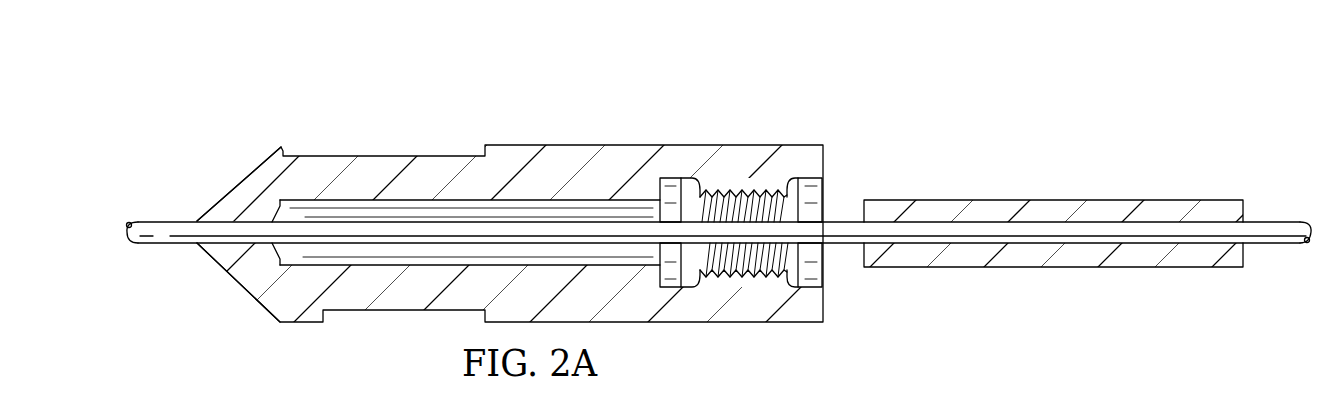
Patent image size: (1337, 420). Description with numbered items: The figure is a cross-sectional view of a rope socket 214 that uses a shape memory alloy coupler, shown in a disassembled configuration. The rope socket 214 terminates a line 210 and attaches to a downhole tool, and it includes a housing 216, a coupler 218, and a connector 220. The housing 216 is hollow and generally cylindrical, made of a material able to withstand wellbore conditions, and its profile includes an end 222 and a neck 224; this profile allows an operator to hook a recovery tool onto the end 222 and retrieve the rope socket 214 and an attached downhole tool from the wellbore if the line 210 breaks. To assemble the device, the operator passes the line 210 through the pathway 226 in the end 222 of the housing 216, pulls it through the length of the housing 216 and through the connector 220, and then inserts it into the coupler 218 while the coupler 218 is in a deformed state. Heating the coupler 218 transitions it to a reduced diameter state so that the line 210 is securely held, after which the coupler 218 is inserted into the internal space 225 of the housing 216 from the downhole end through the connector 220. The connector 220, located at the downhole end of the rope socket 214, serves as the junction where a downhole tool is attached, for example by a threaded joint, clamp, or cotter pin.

The rope socket 214 is at (834, 80).
The housing 216 is at (628, 143).
The neck 224 is at (443, 165).
The end 222 is at (237, 183).
The internal space 225 is at (345, 213).
The pathway 226 is at (190, 215).
The line 210 is at (163, 236).
The connector 220 is at (820, 335).
The coupler 218 is at (1055, 208).